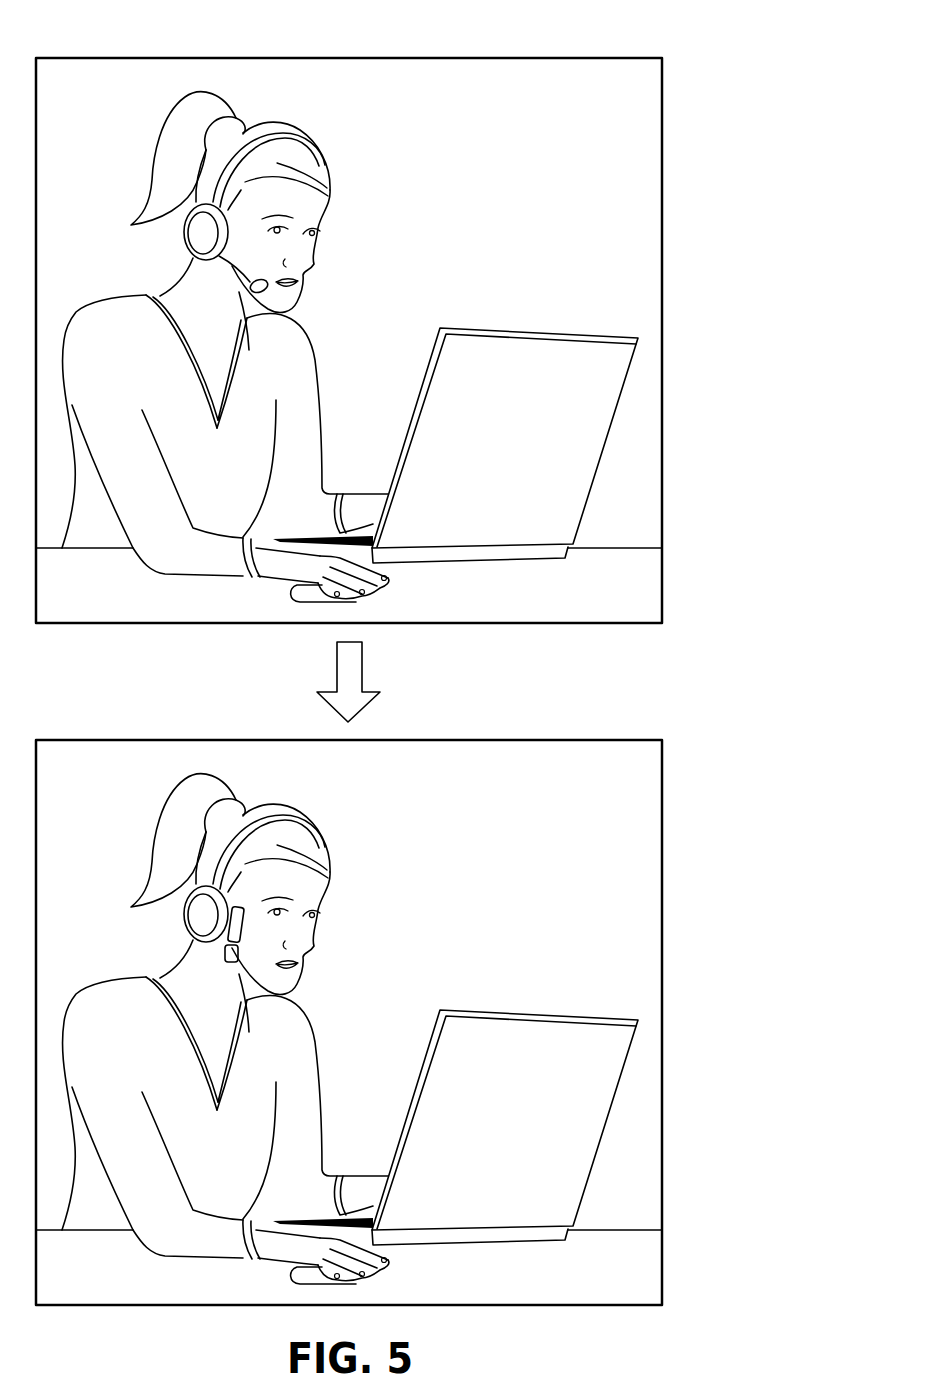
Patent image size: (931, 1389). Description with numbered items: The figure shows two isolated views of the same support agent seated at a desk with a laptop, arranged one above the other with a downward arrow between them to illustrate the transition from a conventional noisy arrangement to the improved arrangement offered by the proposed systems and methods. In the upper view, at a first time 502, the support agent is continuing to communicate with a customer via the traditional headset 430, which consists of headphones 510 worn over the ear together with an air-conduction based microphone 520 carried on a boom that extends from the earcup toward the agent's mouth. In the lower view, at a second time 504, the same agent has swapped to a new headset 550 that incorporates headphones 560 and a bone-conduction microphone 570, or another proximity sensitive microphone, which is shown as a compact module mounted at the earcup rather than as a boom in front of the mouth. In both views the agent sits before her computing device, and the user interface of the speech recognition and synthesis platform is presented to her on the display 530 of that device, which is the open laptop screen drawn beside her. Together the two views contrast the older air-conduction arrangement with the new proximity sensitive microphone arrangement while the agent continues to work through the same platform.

The first time 502 is at (556, 94).
The second time 504 is at (349, 994).
The traditional headset 430 is at (278, 153).
The headphones 510 is at (202, 231).
The air-conduction based microphone 520 is at (253, 287).
The display 530 is at (505, 1077).
The new headset 550 is at (269, 819).
The headphones 560 is at (161, 918).
The bone-conduction microphone 570 is at (165, 968).